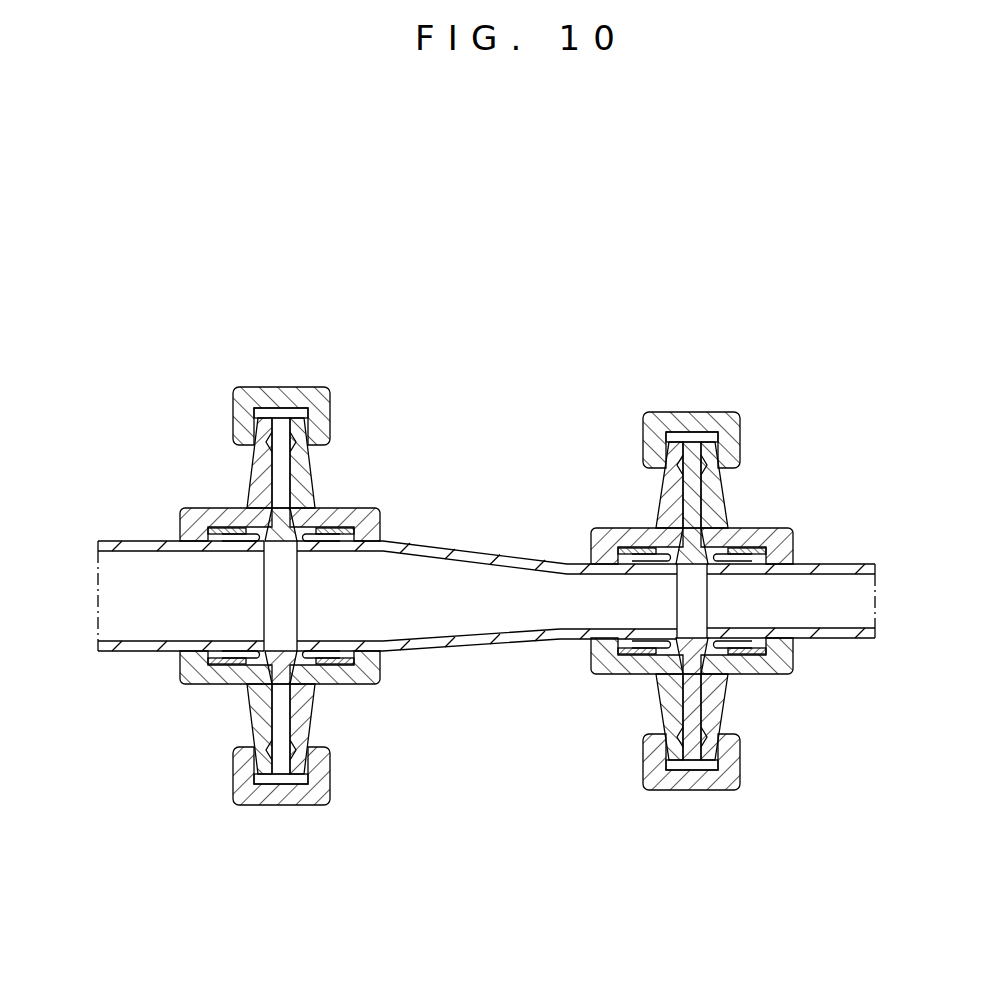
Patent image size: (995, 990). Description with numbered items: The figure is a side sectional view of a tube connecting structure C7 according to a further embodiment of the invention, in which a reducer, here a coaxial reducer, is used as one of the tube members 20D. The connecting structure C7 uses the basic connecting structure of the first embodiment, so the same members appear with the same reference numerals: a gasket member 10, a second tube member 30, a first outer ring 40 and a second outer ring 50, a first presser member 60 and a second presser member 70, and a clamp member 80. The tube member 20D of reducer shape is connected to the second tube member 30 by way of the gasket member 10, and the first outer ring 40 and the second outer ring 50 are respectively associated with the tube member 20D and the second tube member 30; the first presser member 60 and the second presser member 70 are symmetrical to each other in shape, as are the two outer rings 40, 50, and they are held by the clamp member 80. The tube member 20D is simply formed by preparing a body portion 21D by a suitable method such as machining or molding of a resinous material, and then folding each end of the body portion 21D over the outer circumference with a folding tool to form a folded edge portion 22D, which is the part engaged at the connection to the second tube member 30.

The connecting structure C7 is at (222, 386).
The gasket member 10 is at (283, 425).
The clamp member 80 is at (233, 425).
The second presser member 70 is at (180, 520).
The first presser member 60 is at (620, 530).
The second outer ring 50 is at (202, 682).
The first outer ring 40 is at (345, 535).
The second tube member 30 is at (125, 650).
The tube member 20D is at (460, 648).
The body portion 21D is at (466, 548).
The folded edge portion 22D is at (320, 665).